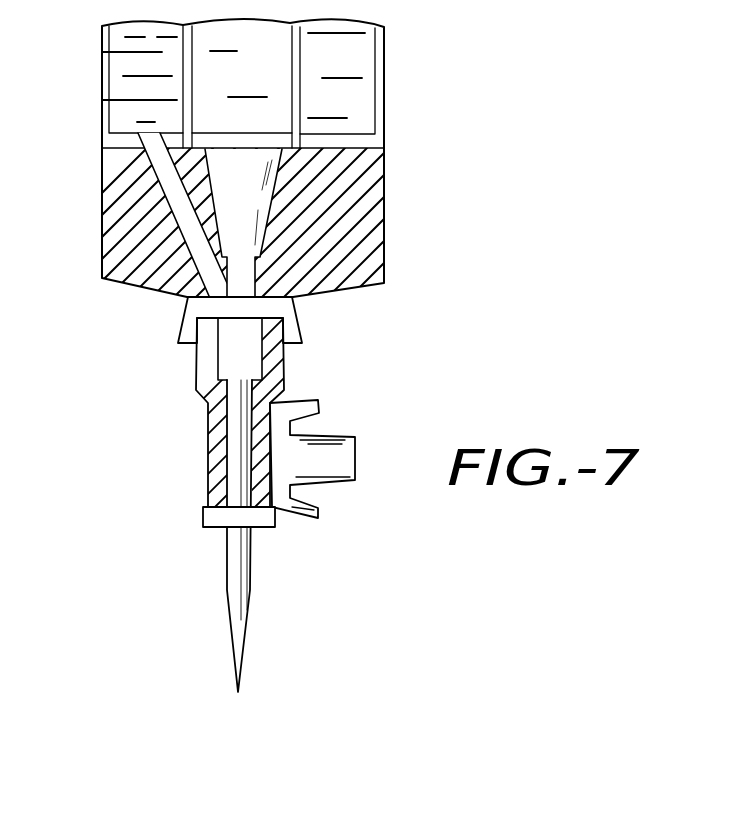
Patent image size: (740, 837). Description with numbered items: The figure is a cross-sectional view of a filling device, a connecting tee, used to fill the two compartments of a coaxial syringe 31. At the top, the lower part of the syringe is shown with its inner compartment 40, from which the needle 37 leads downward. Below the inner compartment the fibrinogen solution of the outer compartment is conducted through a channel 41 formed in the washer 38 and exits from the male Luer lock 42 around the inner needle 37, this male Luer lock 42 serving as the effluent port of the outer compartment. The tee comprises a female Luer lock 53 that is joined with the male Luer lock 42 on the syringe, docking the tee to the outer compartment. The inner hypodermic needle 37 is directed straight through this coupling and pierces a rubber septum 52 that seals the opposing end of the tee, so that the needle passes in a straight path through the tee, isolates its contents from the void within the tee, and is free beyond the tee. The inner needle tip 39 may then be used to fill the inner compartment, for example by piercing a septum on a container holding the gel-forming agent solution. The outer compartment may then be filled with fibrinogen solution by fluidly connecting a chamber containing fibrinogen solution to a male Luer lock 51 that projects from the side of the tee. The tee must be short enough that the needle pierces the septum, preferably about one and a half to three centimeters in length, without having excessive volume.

The container / reservoir assembly 31 is at (402, 88).
The inner compartment 40 is at (282, 68).
The washer 38 is at (352, 275).
The channel 41 is at (180, 230).
The needle 37 is at (276, 212).
The male Luer lock 42 is at (303, 330).
The female Luer lock 53 is at (288, 376).
The male Luer lock 51 is at (345, 462).
The rubber septum 52 is at (255, 528).
The inner needle tip 39 is at (249, 637).